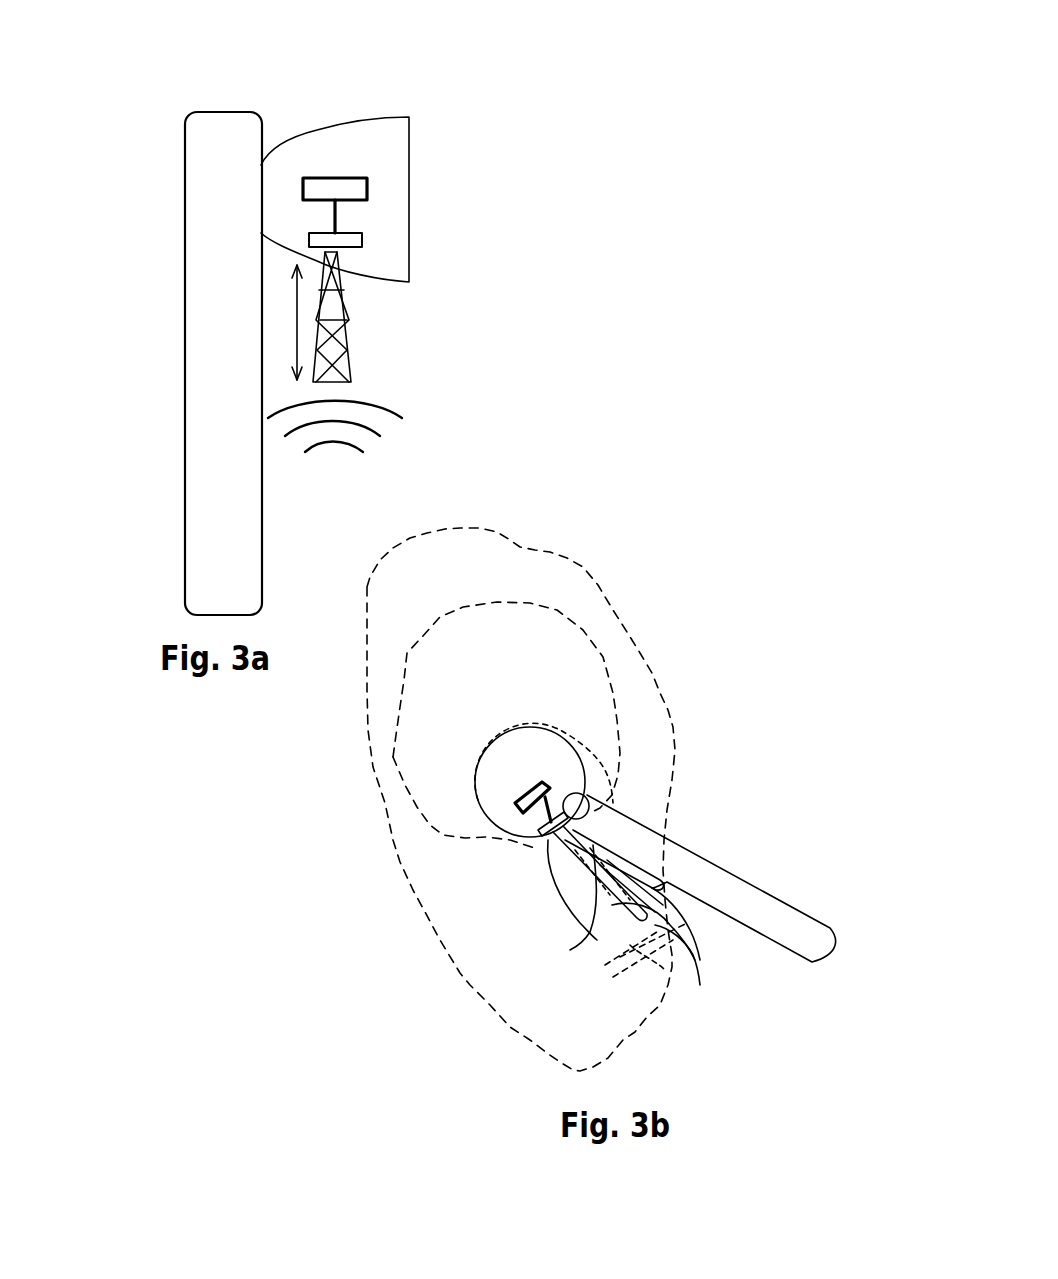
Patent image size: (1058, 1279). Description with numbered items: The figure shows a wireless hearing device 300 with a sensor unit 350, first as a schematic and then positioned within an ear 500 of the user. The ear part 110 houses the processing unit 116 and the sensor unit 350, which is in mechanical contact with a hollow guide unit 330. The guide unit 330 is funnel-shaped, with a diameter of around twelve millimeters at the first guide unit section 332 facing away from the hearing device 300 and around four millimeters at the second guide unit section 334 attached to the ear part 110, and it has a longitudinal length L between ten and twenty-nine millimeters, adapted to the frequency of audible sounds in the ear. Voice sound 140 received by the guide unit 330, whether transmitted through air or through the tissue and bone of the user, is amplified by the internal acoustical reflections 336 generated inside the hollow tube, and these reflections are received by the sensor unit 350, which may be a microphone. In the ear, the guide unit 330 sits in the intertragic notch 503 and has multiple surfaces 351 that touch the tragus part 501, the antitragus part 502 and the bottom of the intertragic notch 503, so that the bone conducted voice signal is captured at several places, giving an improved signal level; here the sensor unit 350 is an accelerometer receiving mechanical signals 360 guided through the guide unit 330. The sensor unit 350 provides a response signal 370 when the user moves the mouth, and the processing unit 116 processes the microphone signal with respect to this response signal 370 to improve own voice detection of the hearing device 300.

In FIG. 3A, the hearing device 300 is at (183, 85).
In FIG. 3B, the hearing device 300 is at (457, 771).
In FIG. 3A, the ear part 110 is at (383, 132).
In FIG. 3B, the ear part 110 is at (560, 735).
In FIG. 3A, the processing unit 116 is at (367, 192).
In FIG. 3B, the processing unit 116 is at (520, 808).
In FIG. 3A, the response signal 370 is at (338, 218).
In FIG. 3B, the response signal 370 is at (547, 828).
In FIG. 3A, the sensor unit 350 is at (362, 243).
In FIG. 3B, the sensor unit 350 is at (587, 793).
In FIG. 3A, the guide unit 330 is at (347, 322).
In FIG. 3A, the second guide unit section 334 is at (349, 290).
In FIG. 3A, the first guide unit section 332 is at (351, 380).
In FIG. 3A, the internal acoustical reflections 336 is at (296, 305).
In FIG. 3A, the longitudinal length L is at (297, 323).
In FIG. 3A, the voice sound 140 is at (385, 437).
In FIG. 3B, the ear 500 is at (614, 610).
In FIG. 3B, the tragus part 501 is at (605, 868).
In FIG. 3B, the antitragus part 502 is at (597, 905).
In FIG. 3B, the intertragic notch 503 is at (700, 960).
In FIG. 3B, the surfaces 351 is at (583, 830).
In FIG. 3B, the mechanical signals 360 is at (674, 880).